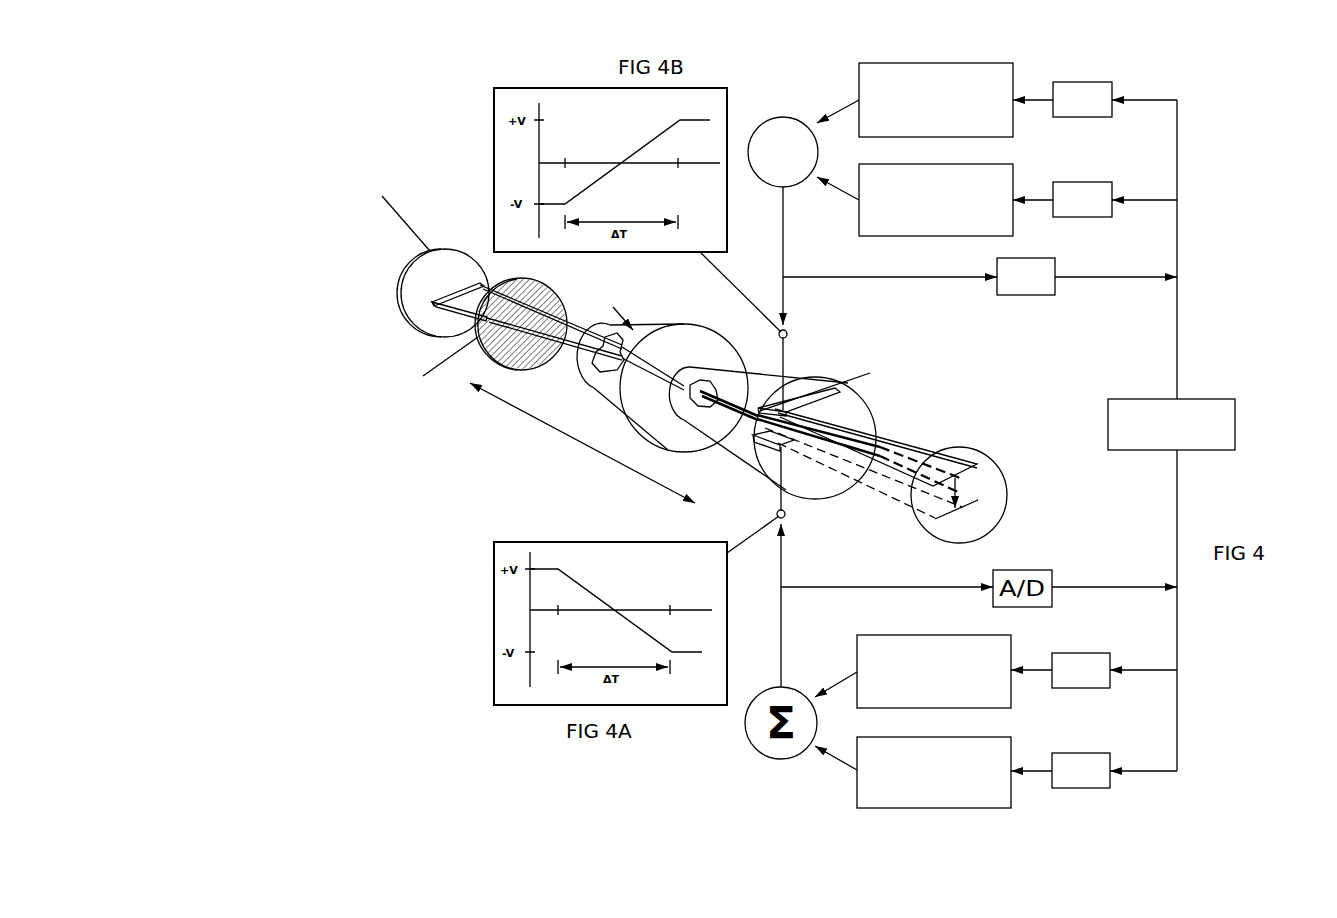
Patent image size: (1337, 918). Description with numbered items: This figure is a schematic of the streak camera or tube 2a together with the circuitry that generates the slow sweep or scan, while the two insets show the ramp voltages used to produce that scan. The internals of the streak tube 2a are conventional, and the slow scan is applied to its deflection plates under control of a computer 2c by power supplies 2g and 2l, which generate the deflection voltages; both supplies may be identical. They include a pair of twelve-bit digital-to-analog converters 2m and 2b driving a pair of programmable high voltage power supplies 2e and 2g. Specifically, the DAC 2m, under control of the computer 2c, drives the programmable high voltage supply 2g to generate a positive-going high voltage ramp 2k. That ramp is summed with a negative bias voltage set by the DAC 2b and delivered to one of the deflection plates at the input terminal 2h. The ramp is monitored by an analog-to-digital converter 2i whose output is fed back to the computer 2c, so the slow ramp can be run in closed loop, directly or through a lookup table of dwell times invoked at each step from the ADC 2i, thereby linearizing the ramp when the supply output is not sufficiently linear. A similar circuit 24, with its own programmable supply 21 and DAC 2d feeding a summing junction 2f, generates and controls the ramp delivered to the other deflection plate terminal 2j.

In FIG. 4, the streak camera or tube 2a is at (532, 417).
In FIG. 4, the digital-to-analog converter 2b is at (1086, 82).
In FIG. 4, the computer 2c is at (1190, 399).
In FIG. 4, the D/A converter 2d is at (1082, 653).
In FIG. 4, the programmable high voltage power supply 2e is at (940, 63).
In FIG. 4, the summing amplifier 2f is at (786, 118).
In FIG. 4, the programmable high voltage power supply 2g is at (1013, 176).
In FIG. 4, the deflection plate input terminal 2h is at (786, 332).
In FIG. 4, the analog-to-digital converter 2i is at (1023, 295).
In FIG. 4, the other deflection plate terminal 2j is at (784, 516).
In FIG. 4, the positive going high voltage ramp 2k is at (1082, 753).
In FIG. 4B, the positive going high voltage ramp 2k is at (648, 142).
In FIG. 4, the power supply 2l is at (965, 463).
In FIG. 4, the digital-to-analog converter 2m is at (1112, 182).
In FIG. 4, the programmable high voltage power supply 21 is at (857, 635).
In FIG. 4, the circuit 24 is at (858, 807).